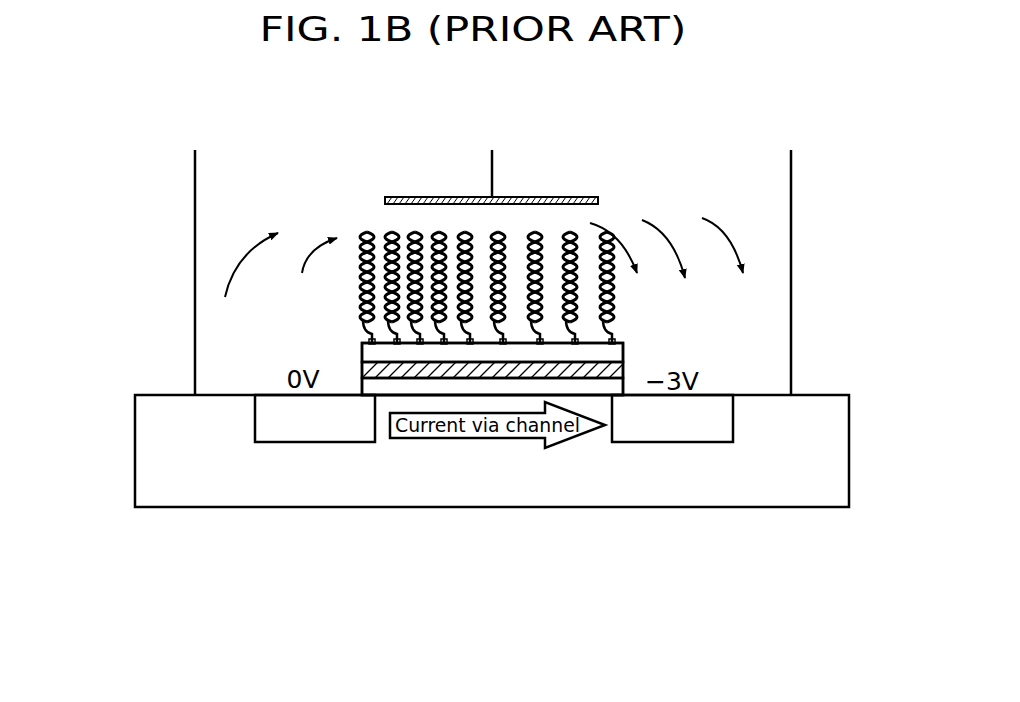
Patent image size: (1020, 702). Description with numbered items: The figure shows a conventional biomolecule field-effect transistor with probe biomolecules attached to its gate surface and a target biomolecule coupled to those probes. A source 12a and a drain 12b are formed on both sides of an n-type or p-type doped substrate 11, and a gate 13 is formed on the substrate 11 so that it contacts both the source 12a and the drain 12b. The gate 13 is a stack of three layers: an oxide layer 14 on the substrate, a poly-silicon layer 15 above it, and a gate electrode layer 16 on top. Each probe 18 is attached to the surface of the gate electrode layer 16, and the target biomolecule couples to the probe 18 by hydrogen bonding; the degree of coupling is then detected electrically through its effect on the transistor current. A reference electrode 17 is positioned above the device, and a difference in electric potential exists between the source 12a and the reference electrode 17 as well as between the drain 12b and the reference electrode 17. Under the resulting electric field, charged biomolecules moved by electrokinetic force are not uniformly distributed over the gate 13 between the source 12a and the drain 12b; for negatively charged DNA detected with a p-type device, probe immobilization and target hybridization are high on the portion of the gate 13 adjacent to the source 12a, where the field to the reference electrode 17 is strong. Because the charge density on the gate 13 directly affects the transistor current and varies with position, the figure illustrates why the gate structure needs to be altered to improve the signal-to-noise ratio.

The substrate 11 is at (160, 477).
The source 12a is at (279, 432).
The drain 12b is at (637, 432).
The gate 13 is at (424, 336).
The oxide layer 14 is at (377, 392).
The poly-silicon layer 15 is at (377, 370).
The gate electrode layer 16 is at (377, 343).
The reference electrode 17 is at (602, 195).
The probe 18 is at (360, 240).